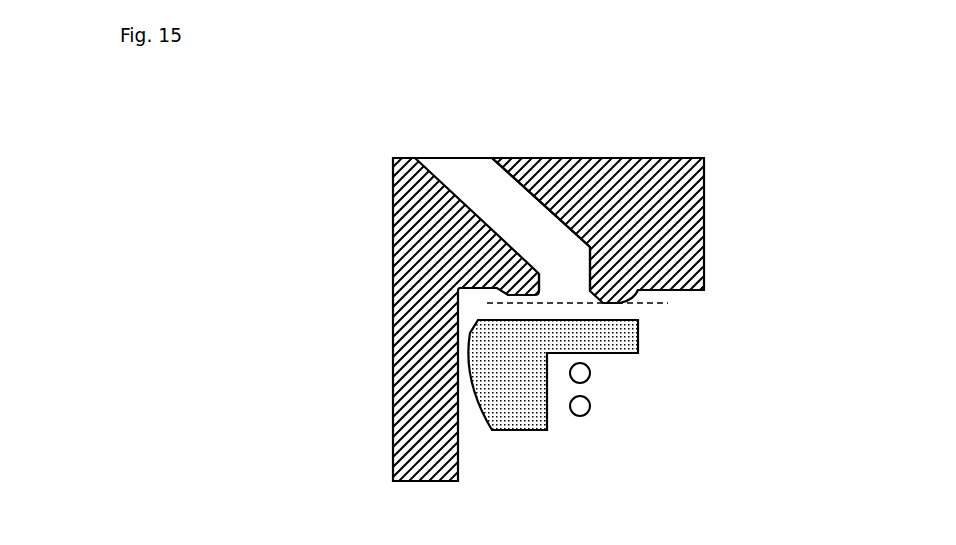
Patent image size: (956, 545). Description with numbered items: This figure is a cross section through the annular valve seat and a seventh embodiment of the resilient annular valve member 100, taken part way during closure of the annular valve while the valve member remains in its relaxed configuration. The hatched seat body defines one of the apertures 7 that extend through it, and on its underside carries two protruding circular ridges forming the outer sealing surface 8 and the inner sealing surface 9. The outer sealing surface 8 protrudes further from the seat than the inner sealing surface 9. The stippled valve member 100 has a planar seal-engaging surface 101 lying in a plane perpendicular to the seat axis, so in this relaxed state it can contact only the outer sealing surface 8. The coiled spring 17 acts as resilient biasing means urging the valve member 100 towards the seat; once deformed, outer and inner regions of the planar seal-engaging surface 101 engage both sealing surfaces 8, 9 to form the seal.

The aperture 7 is at (493, 190).
The outer sealing surface 8 is at (618, 303).
The inner sealing surface 9 is at (534, 268).
The coiled spring 17 is at (590, 408).
The resilient annular valve member 100 is at (510, 425).
The planar seal-engaging surface 101 is at (573, 316).